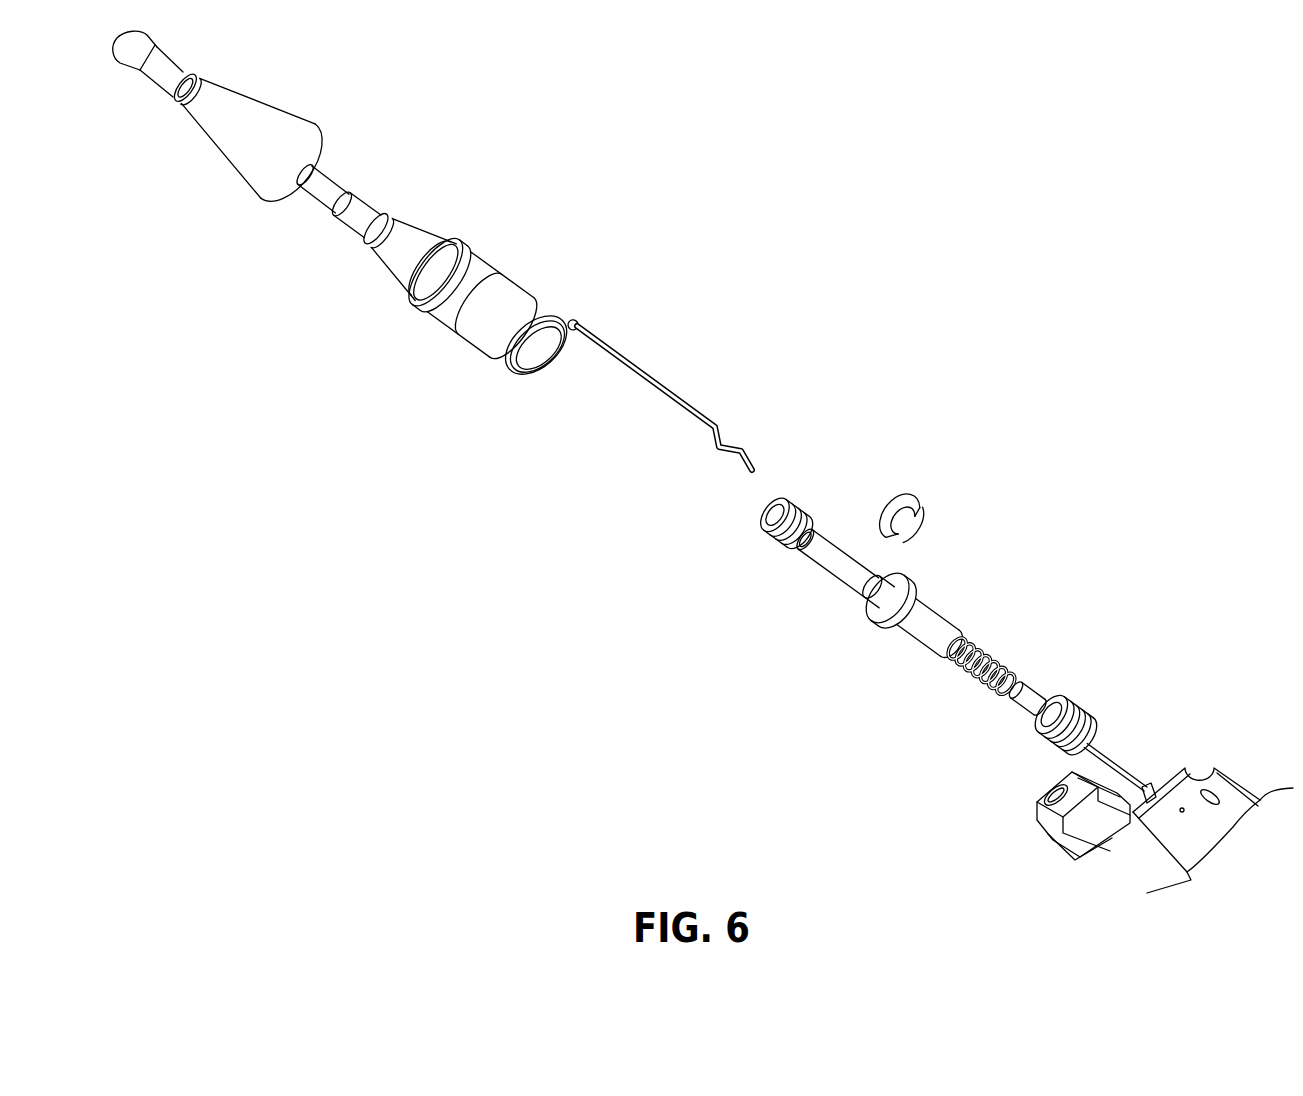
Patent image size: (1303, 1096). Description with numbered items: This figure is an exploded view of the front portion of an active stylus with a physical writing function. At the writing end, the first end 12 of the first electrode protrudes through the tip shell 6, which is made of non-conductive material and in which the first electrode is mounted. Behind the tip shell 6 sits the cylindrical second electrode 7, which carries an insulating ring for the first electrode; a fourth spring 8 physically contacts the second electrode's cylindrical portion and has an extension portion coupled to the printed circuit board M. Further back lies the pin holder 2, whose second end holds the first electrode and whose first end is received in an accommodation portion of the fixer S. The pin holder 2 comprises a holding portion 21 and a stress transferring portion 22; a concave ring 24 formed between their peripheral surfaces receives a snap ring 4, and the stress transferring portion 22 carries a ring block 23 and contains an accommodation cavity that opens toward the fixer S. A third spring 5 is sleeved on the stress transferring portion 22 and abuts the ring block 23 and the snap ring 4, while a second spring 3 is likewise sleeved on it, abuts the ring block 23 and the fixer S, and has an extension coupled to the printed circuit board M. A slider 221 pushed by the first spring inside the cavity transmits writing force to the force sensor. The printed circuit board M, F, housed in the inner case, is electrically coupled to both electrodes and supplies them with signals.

The first end 12 is at (153, 43).
The tip shell 6 is at (293, 117).
The second electrode 7 is at (500, 242).
The fourth spring 8 is at (613, 352).
The third spring 5 is at (800, 503).
The snap ring 4 is at (922, 512).
The pin holder 2 is at (893, 635).
The holding portion 21 is at (838, 577).
The stress transferring portion 22 is at (917, 625).
The slider 221 is at (1025, 698).
The ring block 23 is at (925, 572).
The concave ring 24 is at (893, 586).
The second spring 3 is at (1005, 751).
The printed circuit board M is at (1216, 772).
The fixer S is at (1033, 820).
The printed circuit board F is at (1133, 863).